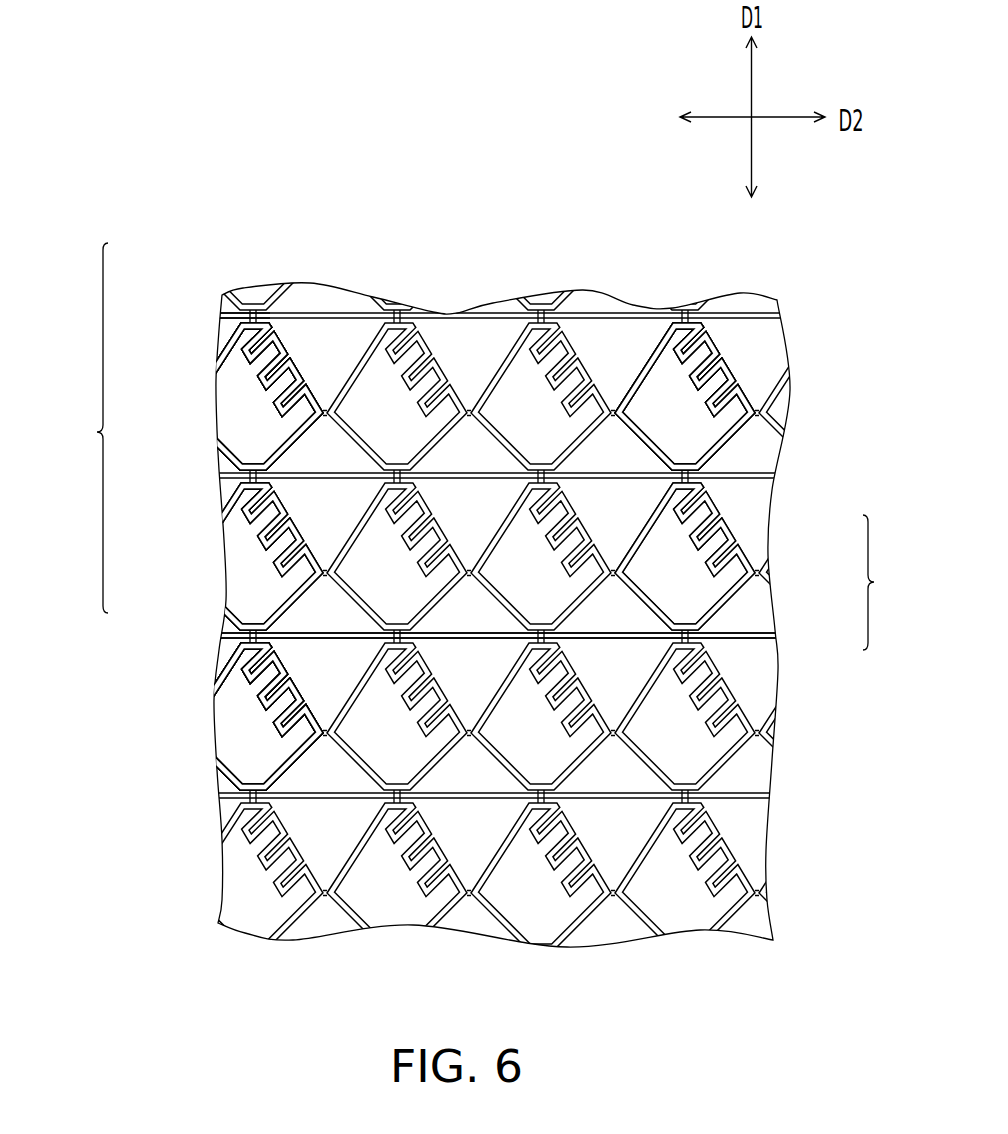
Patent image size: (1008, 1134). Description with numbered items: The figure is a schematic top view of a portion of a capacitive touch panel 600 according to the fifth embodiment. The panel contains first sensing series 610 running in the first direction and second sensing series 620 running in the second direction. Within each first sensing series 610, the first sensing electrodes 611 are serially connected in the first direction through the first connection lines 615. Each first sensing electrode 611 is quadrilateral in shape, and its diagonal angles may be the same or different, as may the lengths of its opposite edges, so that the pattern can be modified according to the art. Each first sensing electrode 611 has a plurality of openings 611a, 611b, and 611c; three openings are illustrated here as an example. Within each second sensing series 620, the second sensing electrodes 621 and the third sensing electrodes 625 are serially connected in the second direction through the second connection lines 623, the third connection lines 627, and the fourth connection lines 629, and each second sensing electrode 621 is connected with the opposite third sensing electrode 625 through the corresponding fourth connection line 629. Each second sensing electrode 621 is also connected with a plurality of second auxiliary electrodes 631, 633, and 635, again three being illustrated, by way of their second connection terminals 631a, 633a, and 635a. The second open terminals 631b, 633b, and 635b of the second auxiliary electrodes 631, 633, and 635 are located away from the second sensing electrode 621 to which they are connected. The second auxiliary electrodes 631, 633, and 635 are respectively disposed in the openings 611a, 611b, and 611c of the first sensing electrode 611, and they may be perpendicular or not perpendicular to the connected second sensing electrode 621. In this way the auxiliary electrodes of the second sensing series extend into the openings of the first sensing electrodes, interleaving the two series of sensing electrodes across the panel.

The capacitive touch panel 600 is at (860, 1100).
The first sensing series 610 is at (890, 582).
The first sensing electrode 611 is at (690, 570).
The opening 611a is at (690, 345).
The opening 611b is at (712, 373).
The opening 611c is at (723, 400).
The first connection line 615 is at (735, 631).
The second sensing series 620 is at (80, 428).
The second sensing electrode 621 is at (287, 340).
The second connection line 623 is at (223, 310).
The third sensing electrode 625 is at (255, 497).
The third connection line 627 is at (257, 517).
The fourth connection line 629 is at (303, 462).
The second auxiliary electrode 631 is at (247, 343).
The second connection terminal 631a is at (250, 663).
The second open terminal 631b is at (262, 672).
The second auxiliary electrode 633 is at (272, 375).
The second connection terminal 633a is at (268, 690).
The second open terminal 633b is at (285, 735).
The second auxiliary electrode 635 is at (313, 407).
The second connection terminal 635a is at (312, 742).
The second open terminal 635b is at (300, 752).